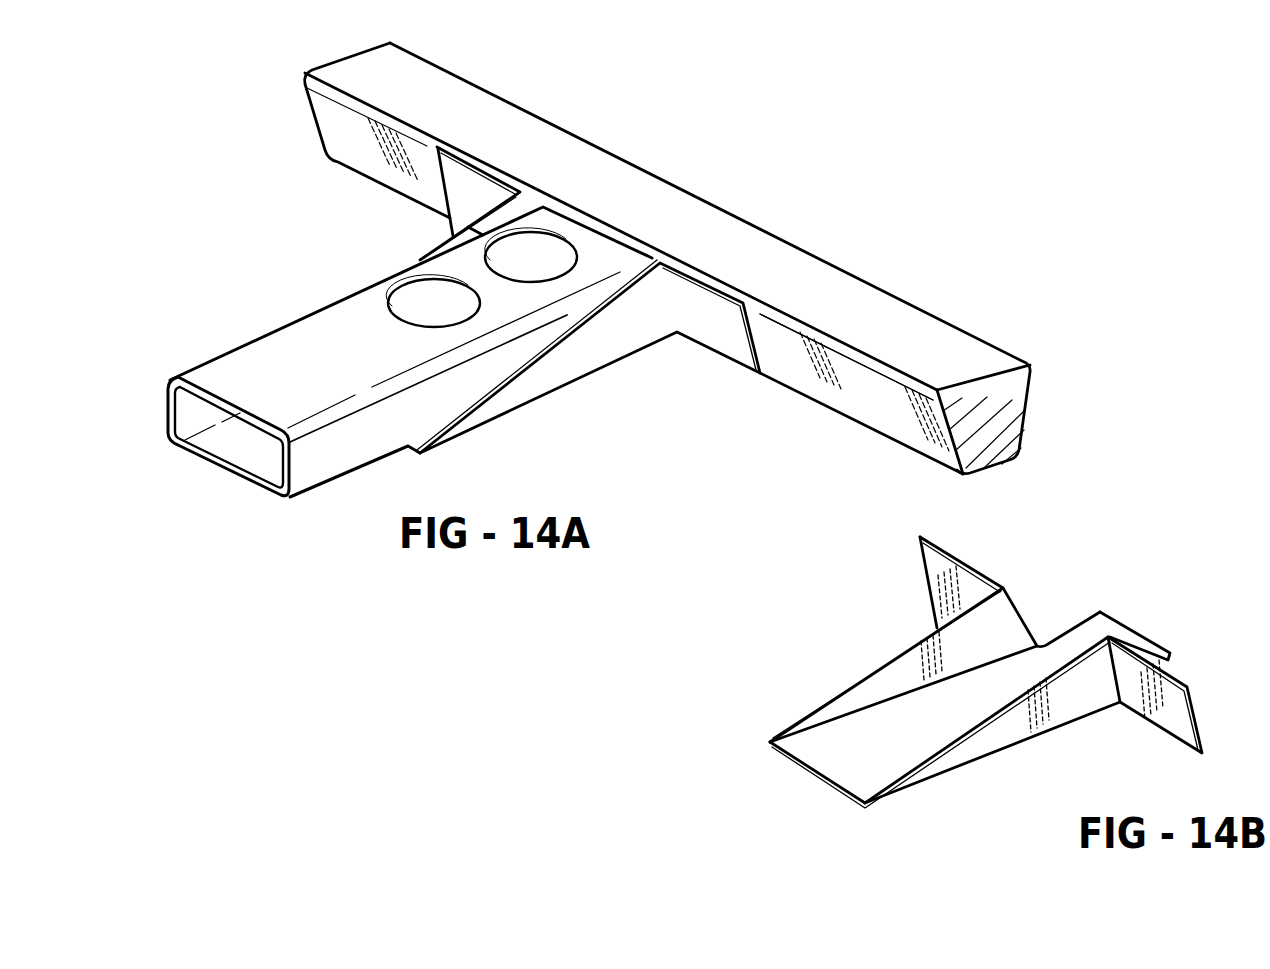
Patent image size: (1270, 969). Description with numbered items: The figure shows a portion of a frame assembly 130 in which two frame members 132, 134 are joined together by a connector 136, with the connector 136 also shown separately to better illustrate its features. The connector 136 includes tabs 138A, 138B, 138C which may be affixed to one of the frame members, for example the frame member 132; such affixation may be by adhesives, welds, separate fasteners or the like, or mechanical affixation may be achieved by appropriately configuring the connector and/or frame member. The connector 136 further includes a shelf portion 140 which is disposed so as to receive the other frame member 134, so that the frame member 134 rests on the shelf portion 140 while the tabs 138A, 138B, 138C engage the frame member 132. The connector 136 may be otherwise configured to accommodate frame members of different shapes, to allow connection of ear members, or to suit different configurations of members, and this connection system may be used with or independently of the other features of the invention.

In FIG. 14A, the frame assembly 130 is at (795, 242).
In FIG. 14A, the frame member 132 is at (857, 297).
In FIG. 14A, the frame member 134 is at (248, 360).
In FIG. 14A, the connector 136 is at (636, 323).
In FIG. 14B, the connector 136 is at (1016, 663).
In FIG. 14B, the tab 138A is at (1180, 710).
In FIG. 14B, the tab 138B is at (935, 572).
In FIG. 14B, the tab 138C is at (1132, 637).
In FIG. 14B, the shelf portion 140 is at (869, 756).